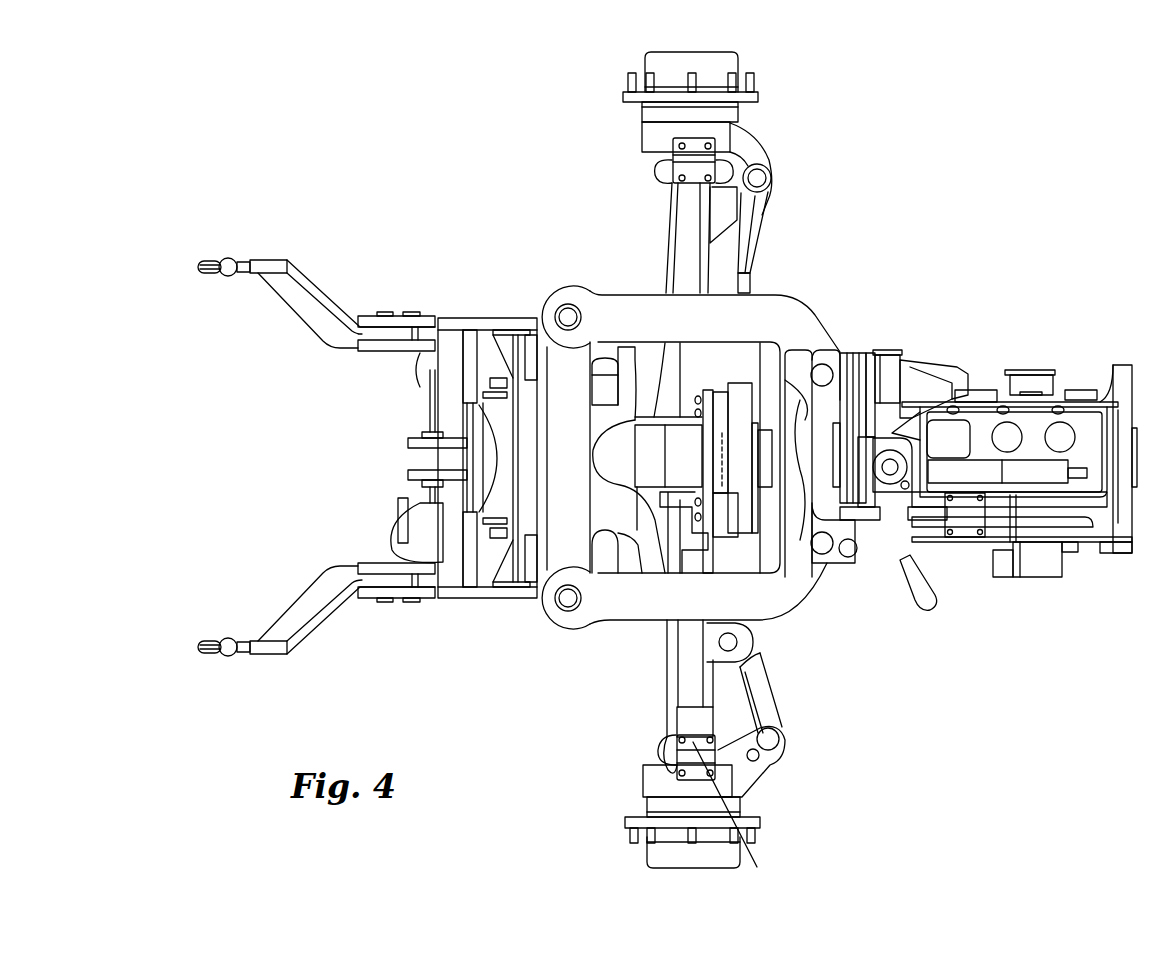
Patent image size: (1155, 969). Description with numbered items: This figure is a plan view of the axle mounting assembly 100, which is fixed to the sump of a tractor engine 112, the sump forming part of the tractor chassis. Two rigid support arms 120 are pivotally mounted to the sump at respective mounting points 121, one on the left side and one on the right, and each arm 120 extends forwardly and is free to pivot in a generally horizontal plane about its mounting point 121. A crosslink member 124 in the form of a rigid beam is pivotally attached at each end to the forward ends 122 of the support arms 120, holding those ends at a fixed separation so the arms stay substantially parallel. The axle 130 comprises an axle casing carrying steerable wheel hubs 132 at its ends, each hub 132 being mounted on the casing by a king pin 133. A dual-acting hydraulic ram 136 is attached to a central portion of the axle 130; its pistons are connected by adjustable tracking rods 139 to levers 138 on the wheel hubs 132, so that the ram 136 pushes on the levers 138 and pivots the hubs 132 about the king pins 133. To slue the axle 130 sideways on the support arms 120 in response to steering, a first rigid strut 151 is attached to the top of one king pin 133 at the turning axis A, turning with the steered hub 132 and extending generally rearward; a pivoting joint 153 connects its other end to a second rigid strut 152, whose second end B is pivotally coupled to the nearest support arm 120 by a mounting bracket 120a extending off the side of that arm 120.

The axle mounting assembly 100 is at (847, 657).
The tractor engine 112 is at (1062, 560).
The rigid support arm 120 is at (805, 320).
The mounting bracket 120a is at (717, 655).
The mounting point 121 is at (822, 375).
The forward end of support arm 122 is at (567, 312).
The crosslink member 124 is at (560, 545).
The axle 130 is at (688, 678).
The steerable wheel hub 132 is at (745, 107).
The king pin 133 is at (690, 165).
The dual-acting hydraulic ram 136 is at (777, 370).
The lever 138 is at (750, 155).
The adjustable tracking rod 139 is at (755, 225).
The first rigid strut 151 is at (737, 760).
The second rigid strut 152 is at (762, 700).
The pivoting joint 153 is at (760, 755).
The turning axis of king pin A is at (734, 812).
The second end of second strut B is at (719, 642).